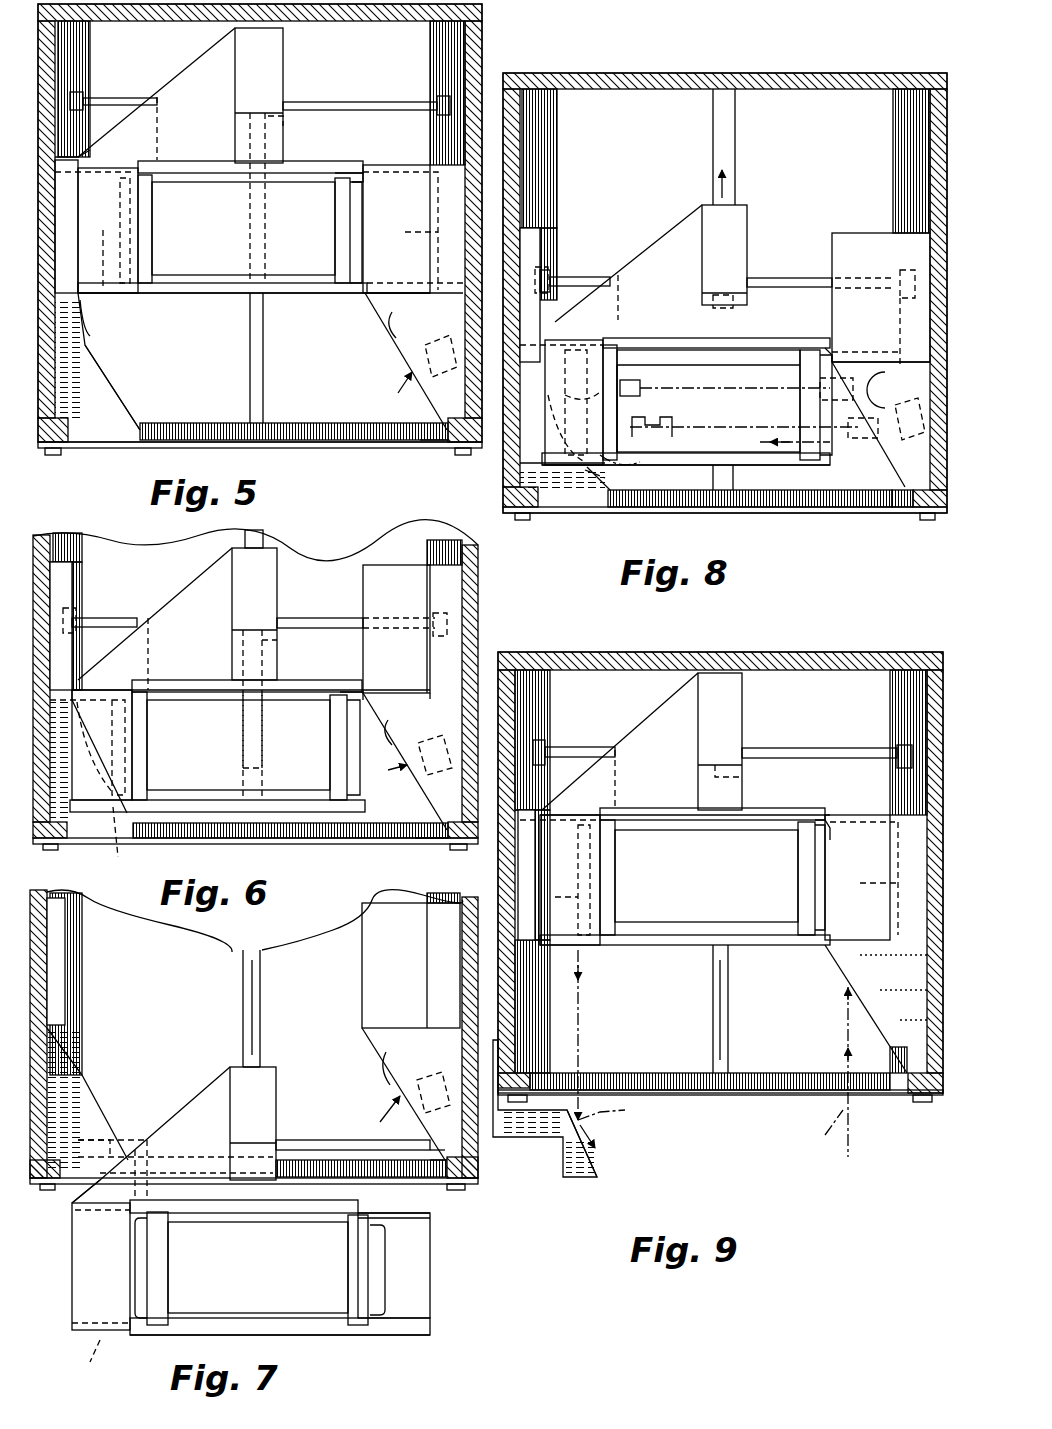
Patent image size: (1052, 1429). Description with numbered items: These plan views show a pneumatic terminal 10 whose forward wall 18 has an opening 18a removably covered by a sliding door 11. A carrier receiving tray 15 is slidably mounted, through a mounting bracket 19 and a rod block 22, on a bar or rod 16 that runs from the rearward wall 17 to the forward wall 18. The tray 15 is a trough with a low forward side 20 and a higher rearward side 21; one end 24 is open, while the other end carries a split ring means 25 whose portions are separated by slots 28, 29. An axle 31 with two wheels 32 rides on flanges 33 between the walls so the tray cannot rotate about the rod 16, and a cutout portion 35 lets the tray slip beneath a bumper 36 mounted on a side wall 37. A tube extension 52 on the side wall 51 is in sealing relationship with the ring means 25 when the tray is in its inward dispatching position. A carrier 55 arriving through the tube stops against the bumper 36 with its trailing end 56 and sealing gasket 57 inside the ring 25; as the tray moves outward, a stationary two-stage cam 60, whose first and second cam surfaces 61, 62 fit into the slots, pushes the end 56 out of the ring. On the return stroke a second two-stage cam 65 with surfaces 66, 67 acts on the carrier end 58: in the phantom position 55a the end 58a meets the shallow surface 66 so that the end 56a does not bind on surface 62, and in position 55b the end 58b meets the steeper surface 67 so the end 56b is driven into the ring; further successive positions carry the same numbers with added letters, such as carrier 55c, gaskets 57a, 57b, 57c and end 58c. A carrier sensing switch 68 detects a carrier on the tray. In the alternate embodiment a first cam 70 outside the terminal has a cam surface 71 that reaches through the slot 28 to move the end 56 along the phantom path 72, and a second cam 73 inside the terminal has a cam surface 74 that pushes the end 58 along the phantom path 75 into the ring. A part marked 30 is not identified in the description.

In FIG. 5, the pneumatic terminal 10 is at (492, 36).
In FIG. 8, the pneumatic terminal 10 is at (817, 57).
In FIG. 6, the pneumatic terminal 10 is at (492, 606).
In FIG. 7, the pneumatic terminal 10 is at (485, 1228).
In FIG. 9, the pneumatic terminal 10 is at (823, 650).
In FIG. 5, the sliding door 11 is at (362, 458).
In FIG. 5, the carrier receiving tray 15 is at (220, 298).
In FIG. 8, the carrier receiving tray 15 is at (760, 338).
In FIG. 6, the carrier receiving tray 15 is at (306, 680).
In FIG. 7, the carrier receiving tray 15 is at (418, 1318).
In FIG. 9, the carrier receiving tray 15 is at (762, 808).
In FIG. 5, the bar or rod 16 is at (252, 350).
In FIG. 8, the bar or rod 16 is at (735, 176).
In FIG. 6, the bar or rod 16 is at (236, 736).
In FIG. 7, the bar or rod 16 is at (262, 1022).
In FIG. 9, the bar or rod 16 is at (730, 1005).
In FIG. 5, the rearward wall 17 is at (356, 22).
In FIG. 8, the rearward wall 17 is at (680, 73).
In FIG. 9, the rearward wall 17 is at (684, 653).
In FIG. 5, the forward wall 18 is at (468, 446).
In FIG. 8, the forward wall 18 is at (522, 515).
In FIG. 6, the forward wall 18 is at (60, 845).
In FIG. 7, the forward wall 18 is at (42, 1186).
In FIG. 9, the forward wall 18 is at (925, 1098).
In FIG. 5, the opening 18a is at (318, 446).
In FIG. 8, the opening 18a is at (666, 510).
In FIG. 6, the opening 18a is at (188, 845).
In FIG. 7, the opening 18a is at (315, 1178).
In FIG. 9, the opening 18a is at (687, 1095).
In FIG. 5, the mounting bracket 19 is at (284, 80).
In FIG. 8, the mounting bracket 19 is at (733, 245).
In FIG. 6, the mounting bracket 19 is at (265, 602).
In FIG. 7, the mounting bracket 19 is at (278, 1068).
In FIG. 9, the mounting bracket 19 is at (744, 724).
In FIG. 5, the forward side 20 is at (192, 292).
In FIG. 8, the forward side 20 is at (762, 470).
In FIG. 6, the forward side 20 is at (277, 806).
In FIG. 7, the forward side 20 is at (185, 1332).
In FIG. 9, the forward side 20 is at (670, 945).
In FIG. 5, the rearward side 21 is at (293, 163).
In FIG. 8, the rearward side 21 is at (662, 345).
In FIG. 6, the rearward side 21 is at (207, 682).
In FIG. 7, the rearward side 21 is at (298, 1206).
In FIG. 9, the rearward side 21 is at (722, 820).
In FIG. 5, the rod block 22 is at (284, 122).
In FIG. 8, the rod block 22 is at (750, 266).
In FIG. 6, the rod block 22 is at (279, 640).
In FIG. 7, the rod block 22 is at (238, 1066).
In FIG. 9, the rod block 22 is at (744, 772).
In FIG. 5, the open end 24 is at (438, 231).
In FIG. 8, the open end 24 is at (896, 350).
In FIG. 6, the open end 24 is at (415, 795).
In FIG. 7, the open end 24 is at (430, 1282).
In FIG. 9, the open end 24 is at (897, 881).
In FIG. 5, the ring-like member 25 is at (108, 270).
In FIG. 8, the ring-like member 25 is at (585, 340).
In FIG. 6, the ring-like member 25 is at (135, 748).
In FIG. 7, the ring-like member 25 is at (85, 1287).
In FIG. 9, the ring-like member 25 is at (605, 878).
In FIG. 5, the slot 28 is at (103, 255).
In FIG. 8, the slot 28 is at (605, 480).
In FIG. 6, the slot 28 is at (126, 843).
In FIG. 7, the slot 28 is at (87, 1362).
In FIG. 9, the slot 28 is at (590, 955).
In FIG. 5, the slot 29 is at (160, 160).
In FIG. 8, the slot 29 is at (620, 302).
In FIG. 6, the slot 29 is at (152, 680).
In FIG. 7, the slot 29 is at (132, 1208).
In FIG. 9, the slot 29 is at (620, 790).
In FIG. 5, the inclined deflector 30 is at (198, 58).
In FIG. 8, the inclined deflector 30 is at (660, 235).
In FIG. 6, the inclined deflector 30 is at (195, 578).
In FIG. 7, the inclined deflector 30 is at (185, 1102).
In FIG. 9, the inclined deflector 30 is at (645, 722).
In FIG. 5, the axle 31 is at (378, 102).
In FIG. 8, the axle 31 is at (815, 290).
In FIG. 6, the axle 31 is at (140, 618).
In FIG. 7, the axle 31 is at (340, 1148).
In FIG. 9, the axle 31 is at (815, 757).
In FIG. 5, the wheels 32 is at (86, 100).
In FIG. 8, the wheels 32 is at (555, 263).
In FIG. 6, the wheels 32 is at (78, 610).
In FIG. 7, the wheels 32 is at (112, 1098).
In FIG. 9, the wheels 32 is at (540, 750).
In FIG. 5, the flanges 33 is at (82, 60).
In FIG. 8, the flanges 33 is at (558, 215).
In FIG. 6, the flanges 33 is at (84, 545).
In FIG. 7, the flanges 33 is at (84, 1015).
In FIG. 9, the flanges 33 is at (548, 722).
In FIG. 5, the cutout portion 35 is at (363, 165).
In FIG. 8, the cutout portion 35 is at (833, 345).
In FIG. 6, the cutout portion 35 is at (365, 690).
In FIG. 7, the cutout portion 35 is at (372, 1210).
In FIG. 9, the cutout portion 35 is at (822, 812).
In FIG. 5, the bumper 36 is at (392, 195).
In FIG. 8, the bumper 36 is at (845, 246).
In FIG. 6, the bumper 36 is at (399, 629).
In FIG. 7, the bumper 36 is at (362, 968).
In FIG. 9, the bumper 36 is at (860, 877).
In FIG. 5, the side wall 37 is at (472, 76).
In FIG. 8, the side wall 37 is at (935, 205).
In FIG. 6, the side wall 37 is at (480, 642).
In FIG. 7, the side wall 37 is at (478, 898).
In FIG. 9, the side wall 37 is at (939, 656).
In FIG. 5, the side wall 51 is at (82, 156).
In FIG. 8, the side wall 51 is at (542, 72).
In FIG. 6, the side wall 51 is at (45, 540).
In FIG. 9, the side wall 51 is at (547, 670).
In FIG. 5, the tube extension 52 is at (66, 210).
In FIG. 8, the tube extension 52 is at (532, 252).
In FIG. 6, the tube extension 52 is at (62, 592).
In FIG. 7, the tube extension 52 is at (60, 970).
In FIG. 9, the tube extension 52 is at (528, 868).
In FIG. 5, the carrier 55 is at (243, 228).
In FIG. 6, the carrier 55 is at (238, 745).
In FIG. 7, the carrier 55 is at (258, 1267).
In FIG. 9, the carrier 55 is at (676, 830).
In FIG. 8, the carrier 55a is at (757, 422).
In FIG. 8, the carrier 55b is at (708, 396).
In FIG. 8, the container wall 55c is at (622, 365).
In FIG. 5, the trailing end 56 is at (138, 250).
In FIG. 8, the trailing end 56 is at (571, 402).
In FIG. 6, the trailing end 56 is at (148, 718).
In FIG. 7, the trailing end 56 is at (137, 1272).
In FIG. 9, the trailing end 56 is at (570, 880).
In FIG. 8, the carrier end 56a is at (645, 456).
In FIG. 8, the carrier end 56b is at (600, 392).
In FIG. 5, the sealing gasket 57 is at (150, 222).
In FIG. 6, the sealing gasket 57 is at (147, 768).
In FIG. 7, the sealing gasket 57 is at (162, 1285).
In FIG. 9, the sealing gasket 57 is at (615, 905).
In FIG. 8, the lower left connector 57a is at (660, 445).
In FIG. 8, the upper left connector 57b is at (642, 388).
In FIG. 8, the left end wall 57c is at (612, 352).
In FIG. 5, the carrier end 58 is at (362, 240).
In FIG. 6, the carrier end 58 is at (345, 733).
In FIG. 7, the carrier end 58 is at (386, 1258).
In FIG. 9, the carrier end 58 is at (822, 900).
In FIG. 8, the carrier end 58a is at (840, 428).
In FIG. 8, the carrier end 58b is at (818, 392).
In FIG. 8, the right end wall 58c is at (812, 462).
In FIG. 5, the stationary two-stage cam 60 is at (92, 392).
In FIG. 8, the stationary two-stage cam 60 is at (596, 500).
In FIG. 6, the stationary two-stage cam 60 is at (98, 840).
In FIG. 7, the stationary two-stage cam 60 is at (95, 1080).
In FIG. 5, the first cam surface 61 is at (96, 332).
In FIG. 8, the first cam surface 61 is at (550, 414).
In FIG. 6, the first cam surface 61 is at (85, 695).
In FIG. 7, the first cam surface 61 is at (70, 1048).
In FIG. 5, the second cam surface 62 is at (128, 406).
In FIG. 8, the second cam surface 62 is at (612, 512).
In FIG. 6, the second cam surface 62 is at (95, 747).
In FIG. 7, the second cam surface 62 is at (108, 1130).
In FIG. 5, the second stationary two-stage cam 65 is at (396, 390).
In FIG. 8, the second stationary two-stage cam 65 is at (905, 478).
In FIG. 6, the second stationary two-stage cam 65 is at (387, 766).
In FIG. 7, the second stationary two-stage cam 65 is at (381, 1115).
In FIG. 5, the first cam surface 66 is at (438, 446).
In FIG. 8, the first cam surface 66 is at (885, 495).
In FIG. 6, the first cam surface 66 is at (400, 842).
In FIG. 7, the first cam surface 66 is at (430, 1118).
In FIG. 5, the second cam surface 67 is at (383, 312).
In FIG. 8, the second cam surface 67 is at (852, 362).
In FIG. 6, the second cam surface 67 is at (387, 714).
In FIG. 7, the second cam surface 67 is at (385, 1047).
In FIG. 5, the carrier sensing switch 68 is at (423, 344).
In FIG. 8, the carrier sensing switch 68 is at (896, 406).
In FIG. 6, the carrier sensing switch 68 is at (418, 747).
In FIG. 7, the carrier sensing switch 68 is at (416, 1082).
In FIG. 9, the first cam 70 is at (560, 1148).
In FIG. 9, the cam surface 71 is at (592, 1143).
In FIG. 9, the phantom line 72 is at (610, 1127).
In FIG. 9, the second cam 73 is at (908, 1008).
In FIG. 9, the cam surface 74 is at (830, 965).
In FIG. 9, the phantom line 75 is at (826, 1139).